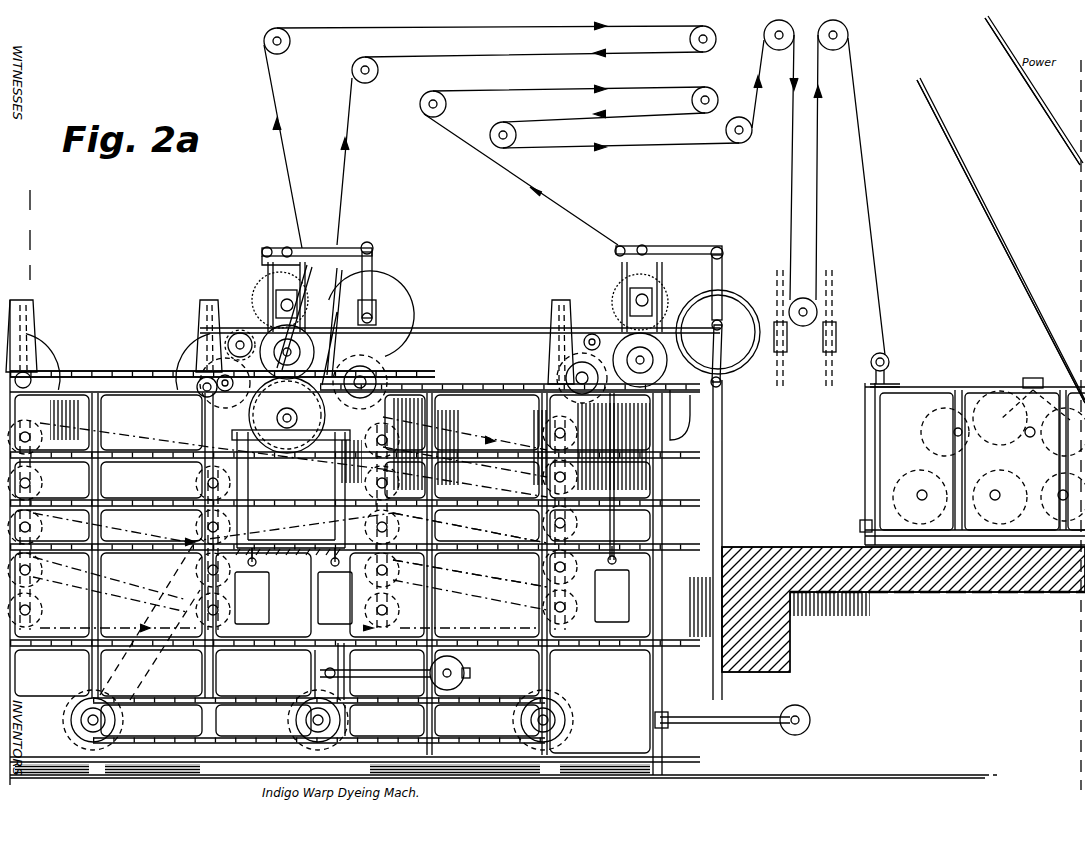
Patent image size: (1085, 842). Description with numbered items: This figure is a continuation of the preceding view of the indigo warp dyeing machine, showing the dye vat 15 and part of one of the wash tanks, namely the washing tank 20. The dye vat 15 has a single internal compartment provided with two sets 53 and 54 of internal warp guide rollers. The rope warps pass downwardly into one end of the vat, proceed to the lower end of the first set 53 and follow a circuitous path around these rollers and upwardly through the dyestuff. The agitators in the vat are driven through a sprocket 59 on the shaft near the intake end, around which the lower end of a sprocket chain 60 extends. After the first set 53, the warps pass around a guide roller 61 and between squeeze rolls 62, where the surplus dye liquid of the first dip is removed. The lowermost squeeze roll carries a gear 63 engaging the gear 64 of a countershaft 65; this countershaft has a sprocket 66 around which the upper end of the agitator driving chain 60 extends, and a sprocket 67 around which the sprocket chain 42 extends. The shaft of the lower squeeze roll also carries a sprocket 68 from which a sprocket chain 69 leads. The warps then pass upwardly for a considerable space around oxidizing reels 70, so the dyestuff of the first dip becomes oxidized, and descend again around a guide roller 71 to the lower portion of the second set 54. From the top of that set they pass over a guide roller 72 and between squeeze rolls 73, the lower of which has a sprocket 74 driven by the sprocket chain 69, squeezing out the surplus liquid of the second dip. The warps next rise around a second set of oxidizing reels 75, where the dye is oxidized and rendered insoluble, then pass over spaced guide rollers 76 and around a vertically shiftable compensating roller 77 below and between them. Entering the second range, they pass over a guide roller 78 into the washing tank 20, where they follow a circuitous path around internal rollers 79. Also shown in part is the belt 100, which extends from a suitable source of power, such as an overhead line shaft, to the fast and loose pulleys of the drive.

The dye vat 15 is at (618, 750).
The washing tank 20 is at (860, 525).
The sprocket chain 42 is at (108, 368).
The first set of internal warp guide rollers 53 is at (48, 612).
The second set of internal guide rollers 54 is at (386, 612).
The sprocket 59 is at (118, 722).
The sprocket chain 60 is at (163, 660).
The guide roller 61 is at (237, 333).
The squeeze rolls 62 is at (263, 328).
The gear 63 is at (268, 330).
The gear 64 is at (320, 520).
The countershaft 65 is at (287, 455).
The sprocket 66 is at (283, 430).
The sprocket 67 is at (240, 422).
The sprocket 68 is at (310, 298).
The sprocket chain 69 is at (456, 330).
The oxidizing reels 70 is at (291, 41).
The guide roller 71 is at (376, 292).
The guide roller 72 is at (586, 336).
The squeeze rolls 73 is at (664, 335).
The sprocket 74 is at (668, 337).
The oxidizing reels 75 is at (447, 104).
The guide rollers 76 is at (786, 24).
The compensating roller 77 is at (808, 300).
The guide roller 78 is at (889, 356).
The internal rollers 79 is at (938, 438).
The belt 100 is at (1040, 118).